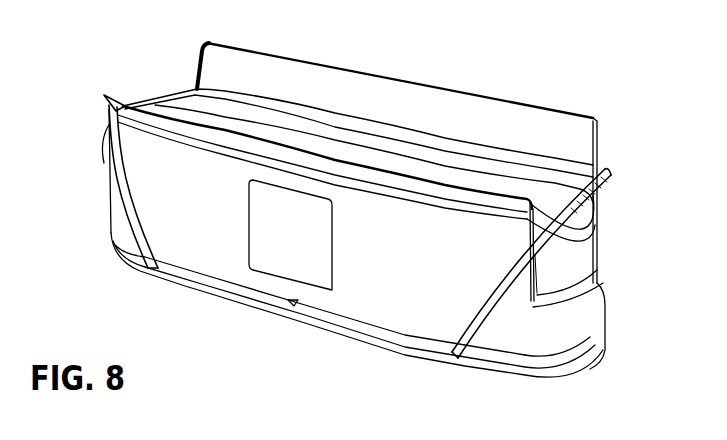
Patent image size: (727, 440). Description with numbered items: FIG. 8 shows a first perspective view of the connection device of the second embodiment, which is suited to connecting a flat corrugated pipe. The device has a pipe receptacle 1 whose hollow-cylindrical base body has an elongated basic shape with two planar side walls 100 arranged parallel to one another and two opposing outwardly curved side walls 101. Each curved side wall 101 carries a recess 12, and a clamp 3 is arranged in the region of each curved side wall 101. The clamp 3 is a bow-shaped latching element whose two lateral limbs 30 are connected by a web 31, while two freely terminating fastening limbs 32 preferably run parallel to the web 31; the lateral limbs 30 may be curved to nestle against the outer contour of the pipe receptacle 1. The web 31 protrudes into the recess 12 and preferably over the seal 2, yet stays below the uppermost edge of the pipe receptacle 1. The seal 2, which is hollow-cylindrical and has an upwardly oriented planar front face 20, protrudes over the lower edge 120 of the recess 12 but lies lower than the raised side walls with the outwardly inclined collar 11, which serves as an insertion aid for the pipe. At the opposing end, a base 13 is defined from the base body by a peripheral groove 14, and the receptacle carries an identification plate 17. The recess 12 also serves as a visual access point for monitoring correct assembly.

The pipe receptacle 1 is at (617, 87).
The seal 2 is at (576, 224).
The clamp 3 is at (627, 150).
The collar 11 is at (115, 98).
The recess 12 is at (538, 270).
The base 13 is at (582, 350).
The groove 14 is at (265, 294).
The identification plate 17 is at (272, 246).
The front face 20 is at (470, 150).
The lateral limb 30 is at (96, 146).
The web 31 is at (170, 83).
The fastening limb 32 is at (148, 266).
The planar side wall 100 is at (304, 88).
The curved side wall 101 is at (568, 306).
The lower edge 120 is at (592, 265).